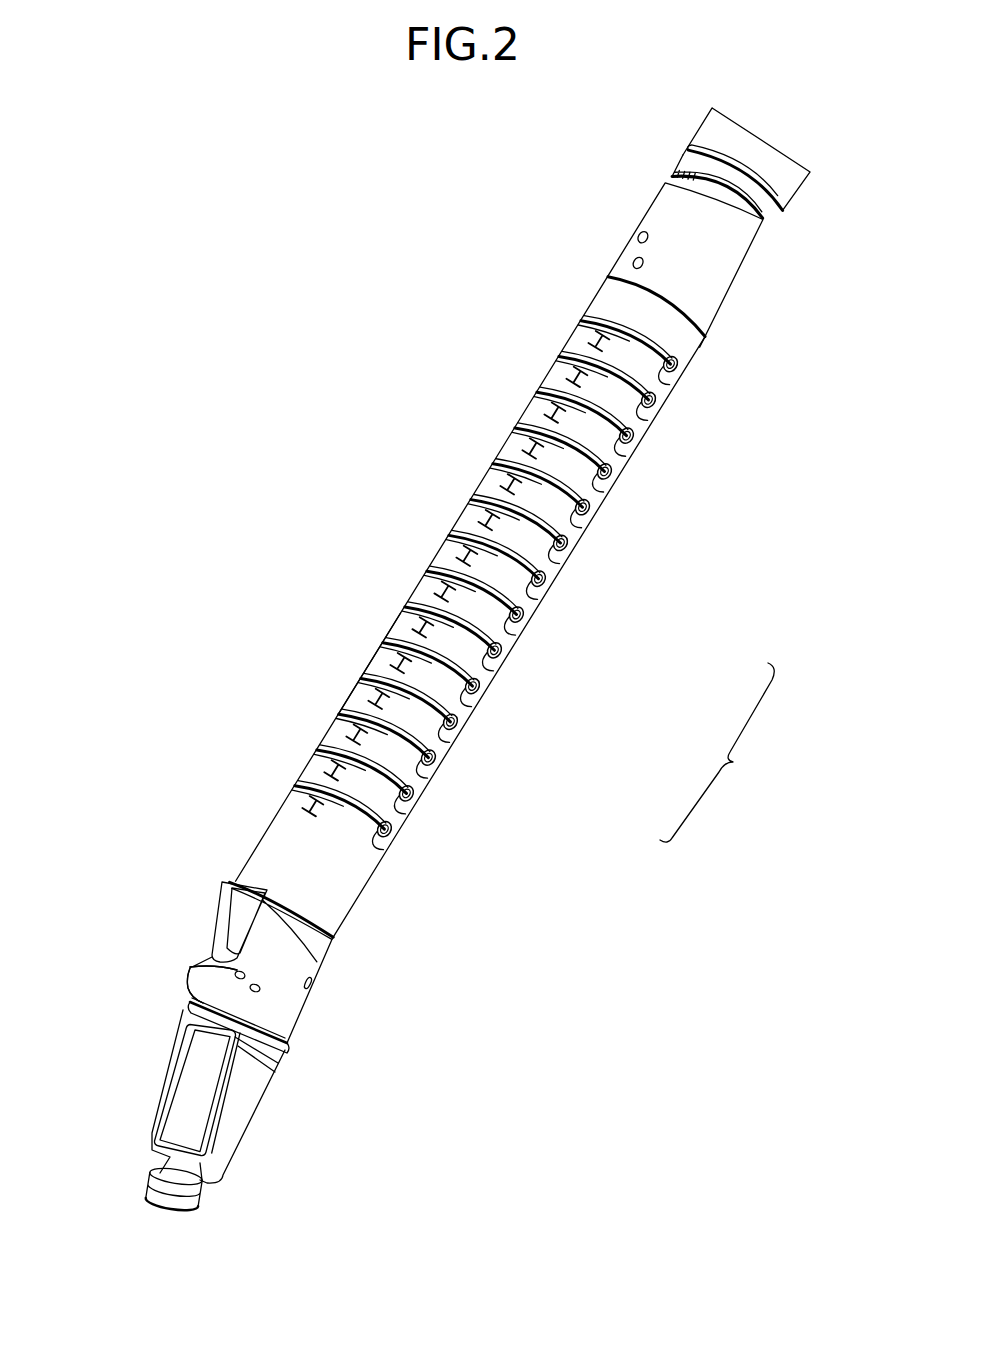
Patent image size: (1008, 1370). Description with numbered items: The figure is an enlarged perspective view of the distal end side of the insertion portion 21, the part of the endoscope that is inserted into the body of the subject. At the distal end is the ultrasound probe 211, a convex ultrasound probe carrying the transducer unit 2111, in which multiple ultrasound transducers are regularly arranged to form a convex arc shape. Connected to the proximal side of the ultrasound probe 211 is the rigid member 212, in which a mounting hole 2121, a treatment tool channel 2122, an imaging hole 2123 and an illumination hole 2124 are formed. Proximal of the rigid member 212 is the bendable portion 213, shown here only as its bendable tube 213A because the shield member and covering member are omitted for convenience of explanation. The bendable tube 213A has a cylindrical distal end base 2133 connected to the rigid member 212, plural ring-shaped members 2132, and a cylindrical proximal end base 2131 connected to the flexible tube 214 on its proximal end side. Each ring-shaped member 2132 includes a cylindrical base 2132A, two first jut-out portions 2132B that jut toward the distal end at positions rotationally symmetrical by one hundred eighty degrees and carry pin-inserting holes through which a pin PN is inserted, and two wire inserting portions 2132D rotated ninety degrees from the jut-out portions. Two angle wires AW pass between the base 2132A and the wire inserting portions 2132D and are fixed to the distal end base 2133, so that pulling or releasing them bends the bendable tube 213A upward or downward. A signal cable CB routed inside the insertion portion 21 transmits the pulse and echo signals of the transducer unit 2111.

The insertion portion 21 is at (281, 438).
The ultrasound probe 211 is at (238, 1115).
The transducer unit 2111 is at (174, 1097).
The rigid member 212 is at (300, 968).
The mounting hole 2121 is at (297, 1032).
The treatment tool channel 2122 is at (232, 920).
The imaging hole 2123 is at (200, 966).
The illumination hole 2124 is at (250, 987).
The bendable portion 213 is at (503, 553).
The bendable tube 213A is at (756, 752).
The proximal end base 2131 is at (713, 305).
The ring-shaped member 2132 is at (462, 572).
The base 2132A is at (588, 335).
The first jut-out portion 2132B is at (662, 426).
The wire inserting portion 2132D is at (572, 376).
The distal end base 2133 is at (365, 857).
The flexible tube 214 is at (791, 183).
The signal cable CB is at (768, 223).
The pin PN is at (545, 583).
The angle wire AW is at (362, 660).